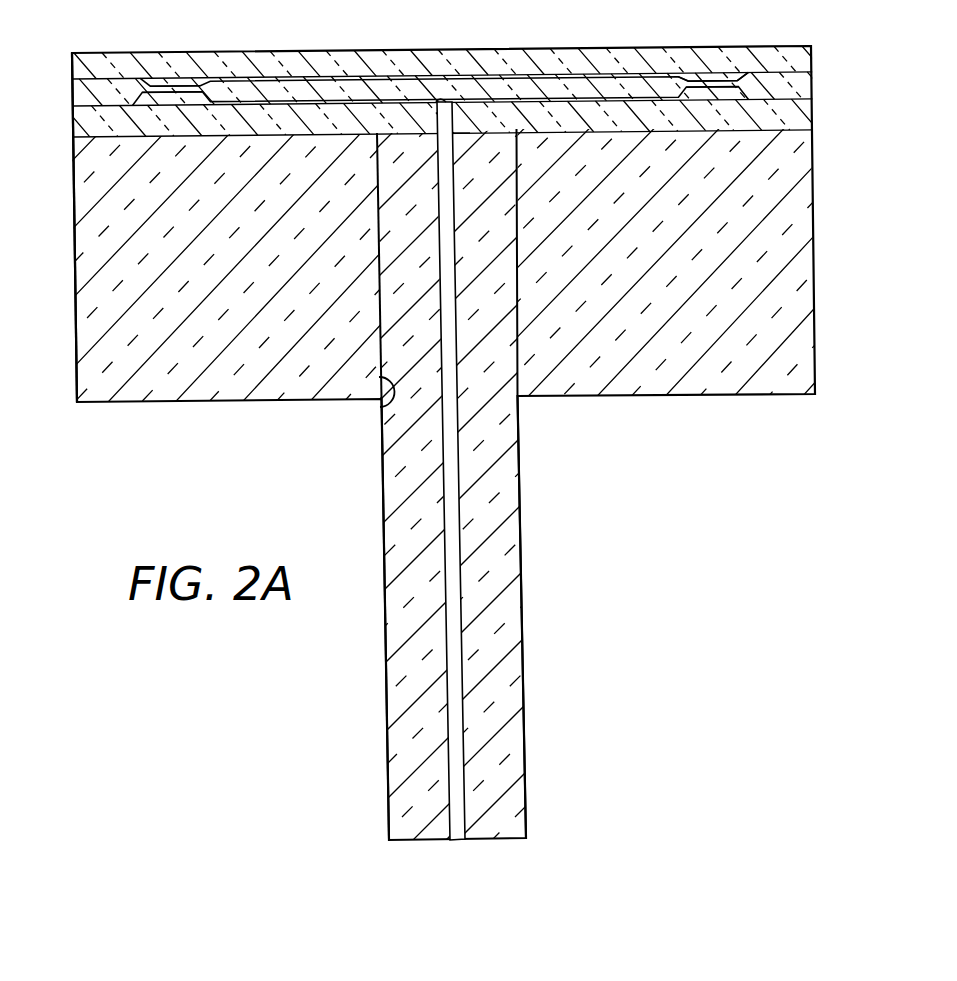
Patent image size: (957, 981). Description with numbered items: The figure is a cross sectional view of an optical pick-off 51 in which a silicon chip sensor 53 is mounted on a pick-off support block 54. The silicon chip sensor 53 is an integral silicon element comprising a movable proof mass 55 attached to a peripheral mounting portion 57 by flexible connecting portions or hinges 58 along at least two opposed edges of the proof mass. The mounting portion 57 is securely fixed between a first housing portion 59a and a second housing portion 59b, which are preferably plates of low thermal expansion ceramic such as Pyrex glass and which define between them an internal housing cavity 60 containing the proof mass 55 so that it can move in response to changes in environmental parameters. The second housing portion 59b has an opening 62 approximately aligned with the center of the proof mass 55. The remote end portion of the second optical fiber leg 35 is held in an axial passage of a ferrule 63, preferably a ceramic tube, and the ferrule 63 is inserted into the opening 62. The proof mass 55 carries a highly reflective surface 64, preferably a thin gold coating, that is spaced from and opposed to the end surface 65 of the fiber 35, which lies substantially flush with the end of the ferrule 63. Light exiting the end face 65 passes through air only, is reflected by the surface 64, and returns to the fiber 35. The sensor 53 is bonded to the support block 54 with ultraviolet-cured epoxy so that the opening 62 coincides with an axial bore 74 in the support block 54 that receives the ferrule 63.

The optical pick-off 51 is at (832, 173).
The silicon chip sensor 53 is at (62, 56).
The pick-off support block 54 is at (76, 374).
The movable proof mass 55 is at (675, 75).
The peripheral mounting portion 57 is at (754, 75).
The flexible connecting portions or hinges 58 is at (163, 83).
The first housing portion 59a is at (812, 53).
The second housing portion 59b is at (812, 107).
The internal housing cavity 60 is at (717, 74).
The opening 62 is at (505, 118).
The ferrule 63 is at (523, 463).
The reflective surface 64 is at (258, 105).
The end surface of the second optical fiber leg 65 is at (436, 101).
The axial bore 74 is at (380, 407).
The second optical fiber leg 35 is at (466, 600).